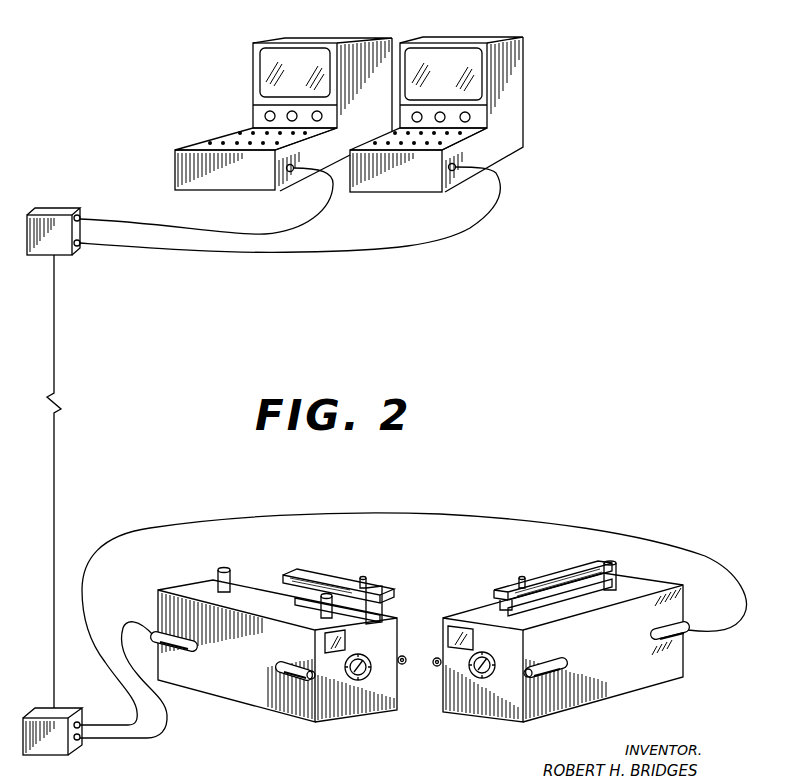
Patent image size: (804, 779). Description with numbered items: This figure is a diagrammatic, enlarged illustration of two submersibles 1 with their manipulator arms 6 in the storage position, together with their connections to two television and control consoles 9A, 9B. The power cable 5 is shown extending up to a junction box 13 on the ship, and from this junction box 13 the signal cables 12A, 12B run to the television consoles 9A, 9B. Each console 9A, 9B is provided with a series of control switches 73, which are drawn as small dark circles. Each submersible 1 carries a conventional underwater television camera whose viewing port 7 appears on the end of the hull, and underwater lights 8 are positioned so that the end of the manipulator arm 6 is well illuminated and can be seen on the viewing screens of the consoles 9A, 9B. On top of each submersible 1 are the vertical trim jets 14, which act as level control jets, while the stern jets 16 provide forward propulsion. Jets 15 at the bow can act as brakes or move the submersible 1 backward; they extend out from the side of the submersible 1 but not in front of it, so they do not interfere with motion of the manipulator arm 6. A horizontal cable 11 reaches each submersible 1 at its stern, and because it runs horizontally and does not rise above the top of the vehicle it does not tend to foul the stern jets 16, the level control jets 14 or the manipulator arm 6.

The submersible 1 is at (393, 616).
The power cable 5 is at (54, 428).
The manipulator arm 6 is at (314, 572).
The viewing ports 7 is at (360, 660).
The underwater lights 8 is at (325, 641).
The television console 9A is at (337, 41).
The television console 9B is at (487, 40).
The horizontal cable 11 is at (135, 703).
The signal cable 12A is at (268, 232).
The signal cable 12B is at (268, 260).
The junction box 13 is at (47, 208).
The vertical trim jets 14 is at (220, 570).
The bow jets 15 is at (293, 678).
The stern jets 16 is at (197, 644).
The control switches 73 is at (253, 135).